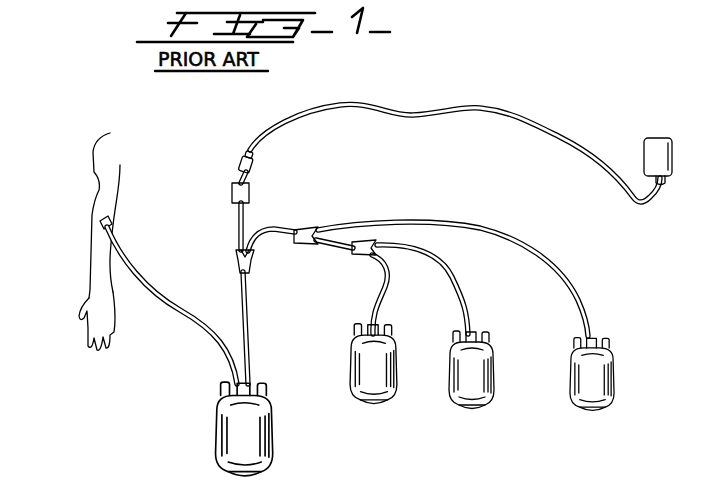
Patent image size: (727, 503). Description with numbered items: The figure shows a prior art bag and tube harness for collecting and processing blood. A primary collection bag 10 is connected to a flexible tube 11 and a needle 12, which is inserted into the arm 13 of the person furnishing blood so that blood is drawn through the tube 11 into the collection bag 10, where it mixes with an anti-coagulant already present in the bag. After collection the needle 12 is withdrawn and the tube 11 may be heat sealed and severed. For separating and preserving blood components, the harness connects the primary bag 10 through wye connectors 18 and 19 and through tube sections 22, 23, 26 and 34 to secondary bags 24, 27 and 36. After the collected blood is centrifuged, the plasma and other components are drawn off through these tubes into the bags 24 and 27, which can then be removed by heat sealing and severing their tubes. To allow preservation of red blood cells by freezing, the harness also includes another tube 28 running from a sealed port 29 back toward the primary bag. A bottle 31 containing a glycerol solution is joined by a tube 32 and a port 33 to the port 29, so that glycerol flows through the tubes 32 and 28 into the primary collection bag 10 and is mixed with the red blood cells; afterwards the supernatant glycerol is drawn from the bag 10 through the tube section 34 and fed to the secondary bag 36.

The primary collection bag 10 is at (214, 444).
The flexible tube 11 is at (177, 307).
The needle 12 is at (100, 226).
The arm 13 is at (93, 149).
The wye connector 18 is at (298, 229).
The wye connector 19 is at (362, 242).
The tube section 22 is at (337, 248).
The tube section 23 is at (380, 288).
The secondary bag 24 is at (348, 366).
The tube section 26 is at (465, 294).
The secondary bag 27 is at (493, 392).
The tube 28 is at (237, 232).
The sealed port 29 is at (232, 189).
The bottle 31 is at (644, 147).
The tube 32 is at (510, 108).
The port 33 is at (243, 159).
The tube section 34 is at (523, 240).
The secondary bag 36 is at (615, 370).